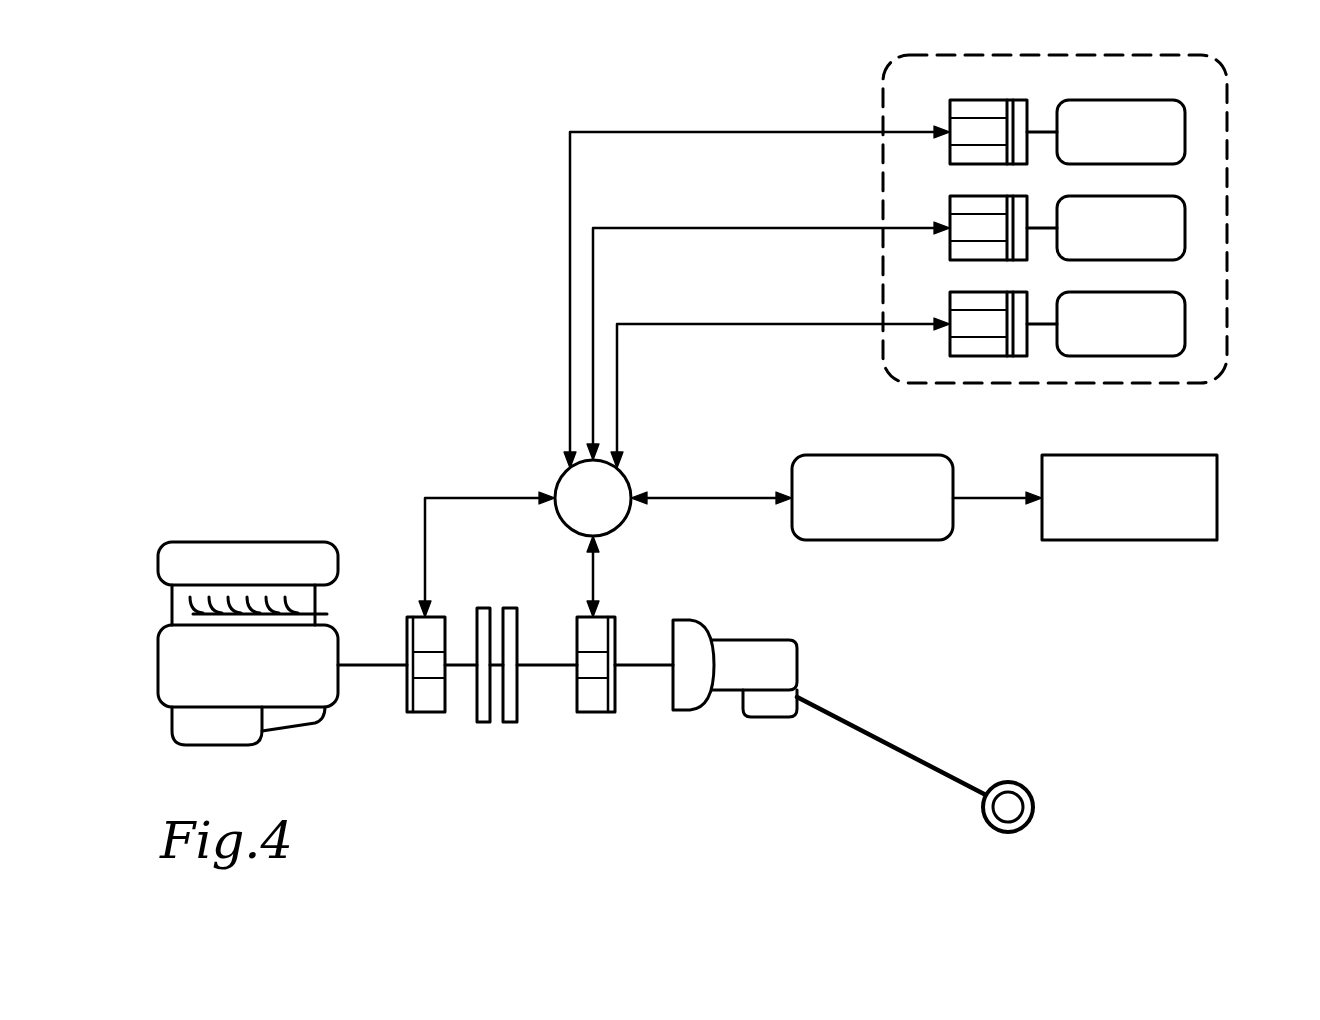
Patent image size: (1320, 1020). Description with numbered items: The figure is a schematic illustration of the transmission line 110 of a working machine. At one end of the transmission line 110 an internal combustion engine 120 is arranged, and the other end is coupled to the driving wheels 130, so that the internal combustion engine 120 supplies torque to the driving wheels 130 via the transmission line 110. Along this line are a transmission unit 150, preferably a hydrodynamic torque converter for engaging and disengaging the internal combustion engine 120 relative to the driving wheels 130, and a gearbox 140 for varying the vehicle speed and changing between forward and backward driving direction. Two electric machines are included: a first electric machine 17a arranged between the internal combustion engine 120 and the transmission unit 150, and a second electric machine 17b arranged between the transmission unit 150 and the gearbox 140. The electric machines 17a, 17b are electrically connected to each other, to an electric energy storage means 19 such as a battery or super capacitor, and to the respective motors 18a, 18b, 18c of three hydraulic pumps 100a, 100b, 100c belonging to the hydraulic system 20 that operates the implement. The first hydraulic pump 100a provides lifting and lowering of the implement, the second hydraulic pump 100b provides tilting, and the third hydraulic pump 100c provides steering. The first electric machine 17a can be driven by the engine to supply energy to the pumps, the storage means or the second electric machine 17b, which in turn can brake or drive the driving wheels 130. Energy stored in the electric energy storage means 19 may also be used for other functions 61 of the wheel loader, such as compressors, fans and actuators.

The hydraulic system 20 is at (846, 72).
The motor 18a is at (971, 358).
The motor 18b is at (963, 203).
The motor 18c is at (976, 108).
The first hydraulic pump 100a is at (1120, 340).
The second hydraulic pump 100b is at (1162, 225).
The third hydraulic pump 100c is at (1172, 122).
The transmission line 110 is at (443, 402).
The electric energy storage means 19 is at (917, 520).
The other functions 61 is at (1157, 520).
The internal combustion engine 120 is at (180, 668).
The first electric machine 17a is at (422, 660).
The second electric machine 17b is at (582, 670).
The transmission unit 150 is at (497, 718).
The gearbox 140 is at (777, 665).
The driving wheels 130 is at (1030, 802).